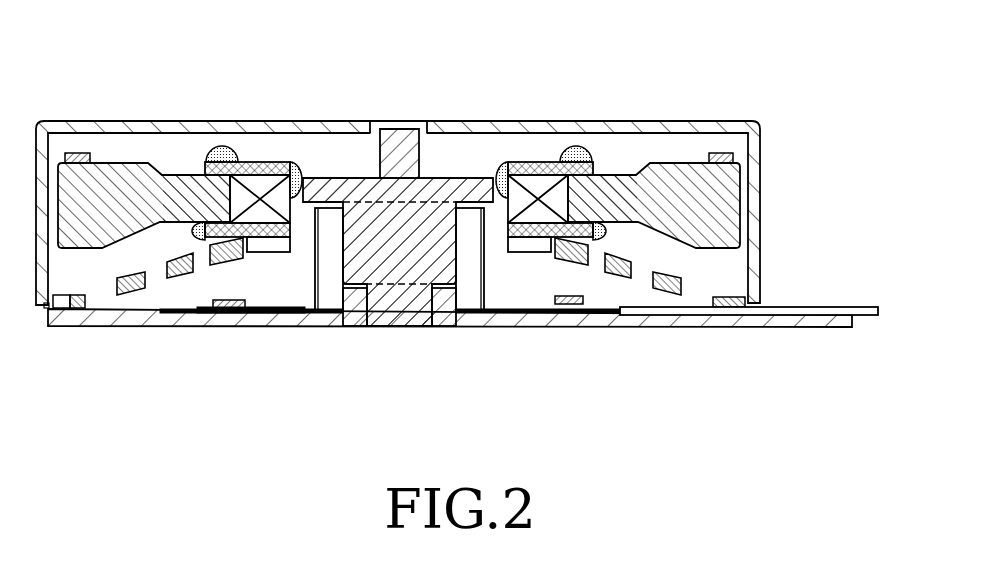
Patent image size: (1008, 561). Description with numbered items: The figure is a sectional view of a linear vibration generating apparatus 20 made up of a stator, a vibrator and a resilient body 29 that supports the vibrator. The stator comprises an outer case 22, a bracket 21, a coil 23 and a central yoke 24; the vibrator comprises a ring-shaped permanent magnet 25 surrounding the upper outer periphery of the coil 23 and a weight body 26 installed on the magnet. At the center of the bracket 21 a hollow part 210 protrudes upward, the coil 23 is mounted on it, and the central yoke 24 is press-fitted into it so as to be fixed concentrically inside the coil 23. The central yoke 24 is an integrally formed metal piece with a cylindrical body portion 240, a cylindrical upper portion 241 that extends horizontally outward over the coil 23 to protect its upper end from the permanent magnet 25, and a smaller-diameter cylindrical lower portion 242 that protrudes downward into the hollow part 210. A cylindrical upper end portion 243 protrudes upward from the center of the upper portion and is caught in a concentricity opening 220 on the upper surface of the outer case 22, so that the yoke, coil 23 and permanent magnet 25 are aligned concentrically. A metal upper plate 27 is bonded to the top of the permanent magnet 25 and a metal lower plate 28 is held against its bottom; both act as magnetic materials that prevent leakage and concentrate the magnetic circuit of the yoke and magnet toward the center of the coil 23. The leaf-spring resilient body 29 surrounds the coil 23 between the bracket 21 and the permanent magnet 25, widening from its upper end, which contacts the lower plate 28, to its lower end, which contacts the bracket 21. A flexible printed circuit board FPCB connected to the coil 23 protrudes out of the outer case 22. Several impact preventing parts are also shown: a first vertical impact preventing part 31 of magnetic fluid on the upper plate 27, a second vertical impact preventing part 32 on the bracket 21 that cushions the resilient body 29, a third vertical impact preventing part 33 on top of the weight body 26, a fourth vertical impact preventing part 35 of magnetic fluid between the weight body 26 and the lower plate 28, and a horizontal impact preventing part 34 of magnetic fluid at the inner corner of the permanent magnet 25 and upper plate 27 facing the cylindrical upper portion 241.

The linear vibration generating apparatus 20 is at (726, 68).
The bracket 21 is at (210, 320).
The outer case 22 is at (753, 150).
The concentricity opening 220 is at (375, 127).
The coil 23 is at (472, 302).
The central yoke 24 is at (400, 205).
The cylindrical body portion 240 is at (360, 263).
The cylindrical upper portion 241 is at (467, 183).
The cylindrical lower portion 242 is at (418, 307).
The cylindrical upper end portion 243 is at (398, 135).
The hollow part 210 is at (350, 303).
The permanent magnet 25 is at (257, 187).
The weight body 26 is at (725, 207).
The upper plate 27 is at (545, 160).
The lower plate 28 is at (260, 240).
The resilient body 29 is at (677, 280).
The first vertical impact preventing part 31 is at (217, 150).
The second vertical impact preventing part 32 is at (233, 295).
The third vertical impact preventing part 33 is at (82, 153).
The horizontal impact preventing part 34 is at (303, 153).
The fourth vertical impact preventing part 35 is at (620, 227).
The flexible printed circuit board FPCB is at (862, 305).